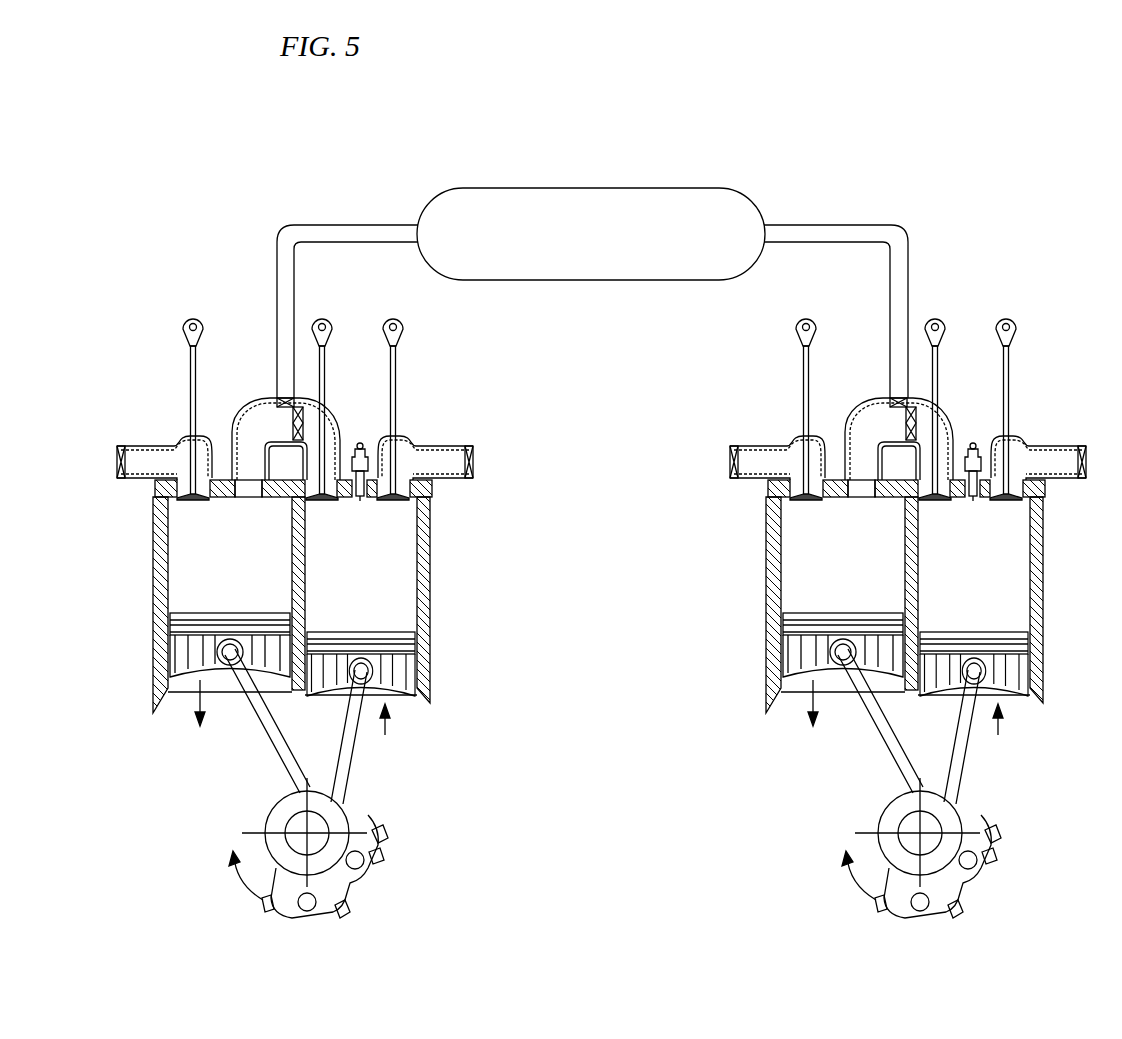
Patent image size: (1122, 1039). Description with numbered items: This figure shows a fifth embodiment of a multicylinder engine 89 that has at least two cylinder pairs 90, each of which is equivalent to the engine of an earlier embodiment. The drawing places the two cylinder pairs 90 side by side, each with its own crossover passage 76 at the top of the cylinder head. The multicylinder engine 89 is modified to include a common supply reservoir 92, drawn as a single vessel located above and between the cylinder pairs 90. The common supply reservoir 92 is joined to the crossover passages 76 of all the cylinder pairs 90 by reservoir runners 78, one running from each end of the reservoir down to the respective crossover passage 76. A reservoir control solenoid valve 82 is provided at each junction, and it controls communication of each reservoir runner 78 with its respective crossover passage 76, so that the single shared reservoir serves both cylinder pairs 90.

The crossover passage 76 is at (258, 418).
The reservoir runner 78 is at (290, 268).
The reservoir control solenoid valve 82 is at (286, 395).
The multicylinder engine 89 is at (601, 522).
The cylinder pair 90 is at (601, 608).
The common supply reservoir 92 is at (513, 282).